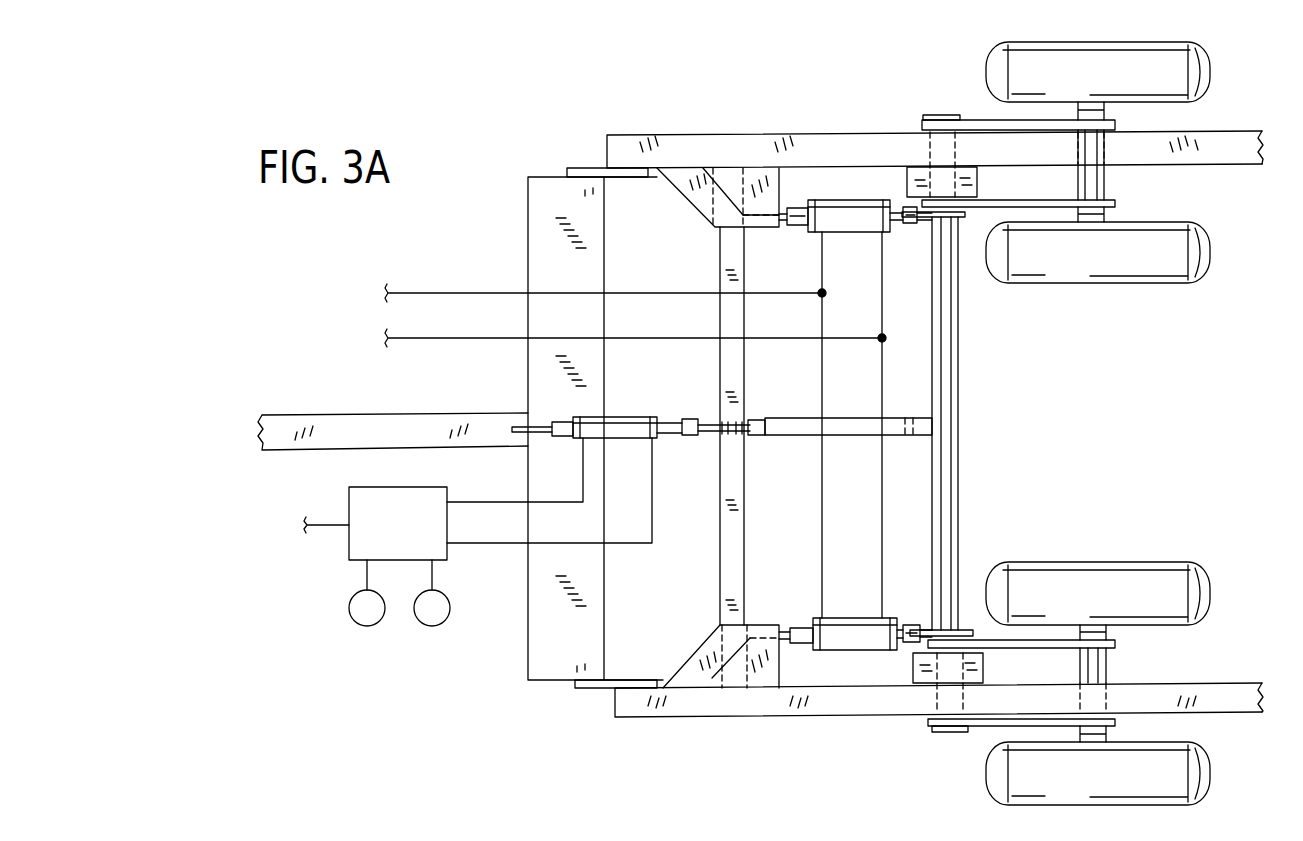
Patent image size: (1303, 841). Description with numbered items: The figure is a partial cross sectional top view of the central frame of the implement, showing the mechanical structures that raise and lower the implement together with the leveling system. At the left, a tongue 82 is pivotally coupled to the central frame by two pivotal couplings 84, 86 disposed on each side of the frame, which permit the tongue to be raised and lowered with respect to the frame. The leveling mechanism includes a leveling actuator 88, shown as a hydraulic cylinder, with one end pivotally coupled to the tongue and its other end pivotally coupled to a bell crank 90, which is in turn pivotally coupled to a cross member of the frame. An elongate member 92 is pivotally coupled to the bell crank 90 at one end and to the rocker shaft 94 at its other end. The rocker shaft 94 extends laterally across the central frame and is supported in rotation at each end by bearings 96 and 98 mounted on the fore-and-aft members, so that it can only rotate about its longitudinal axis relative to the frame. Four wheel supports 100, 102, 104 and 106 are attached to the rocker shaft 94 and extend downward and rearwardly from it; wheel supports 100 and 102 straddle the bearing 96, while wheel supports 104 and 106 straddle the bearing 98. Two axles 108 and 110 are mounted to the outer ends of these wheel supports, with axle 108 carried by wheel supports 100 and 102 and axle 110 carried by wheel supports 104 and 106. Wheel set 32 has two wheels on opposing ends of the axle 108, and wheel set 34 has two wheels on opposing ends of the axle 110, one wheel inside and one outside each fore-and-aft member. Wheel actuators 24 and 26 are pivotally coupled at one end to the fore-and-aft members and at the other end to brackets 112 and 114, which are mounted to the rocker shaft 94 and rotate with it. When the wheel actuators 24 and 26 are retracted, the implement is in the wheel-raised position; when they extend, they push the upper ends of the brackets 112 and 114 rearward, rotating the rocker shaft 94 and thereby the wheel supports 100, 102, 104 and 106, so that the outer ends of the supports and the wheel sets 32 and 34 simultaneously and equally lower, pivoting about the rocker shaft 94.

The wheel actuator 24 is at (857, 618).
The wheel actuator 26 is at (850, 232).
The wheel set 32 is at (1206, 522).
The wheel set 34 is at (1224, 308).
The tongue 82 is at (393, 413).
The pivotal coupling 84 is at (608, 688).
The pivotal coupling 86 is at (595, 168).
The leveling actuator 88 is at (613, 417).
The bell crank 90 is at (708, 435).
The elongate member 92 is at (782, 418).
The rocker shaft 94 is at (958, 391).
The bearing 96 is at (913, 665).
The bearing 98 is at (978, 177).
The wheel support 100 is at (993, 648).
The wheel support 102 is at (987, 727).
The wheel support 104 is at (1008, 200).
The wheel support 106 is at (972, 120).
The axle 108 is at (1108, 662).
The axle 110 is at (1100, 182).
The bracket 112 is at (968, 628).
The bracket 114 is at (923, 219).